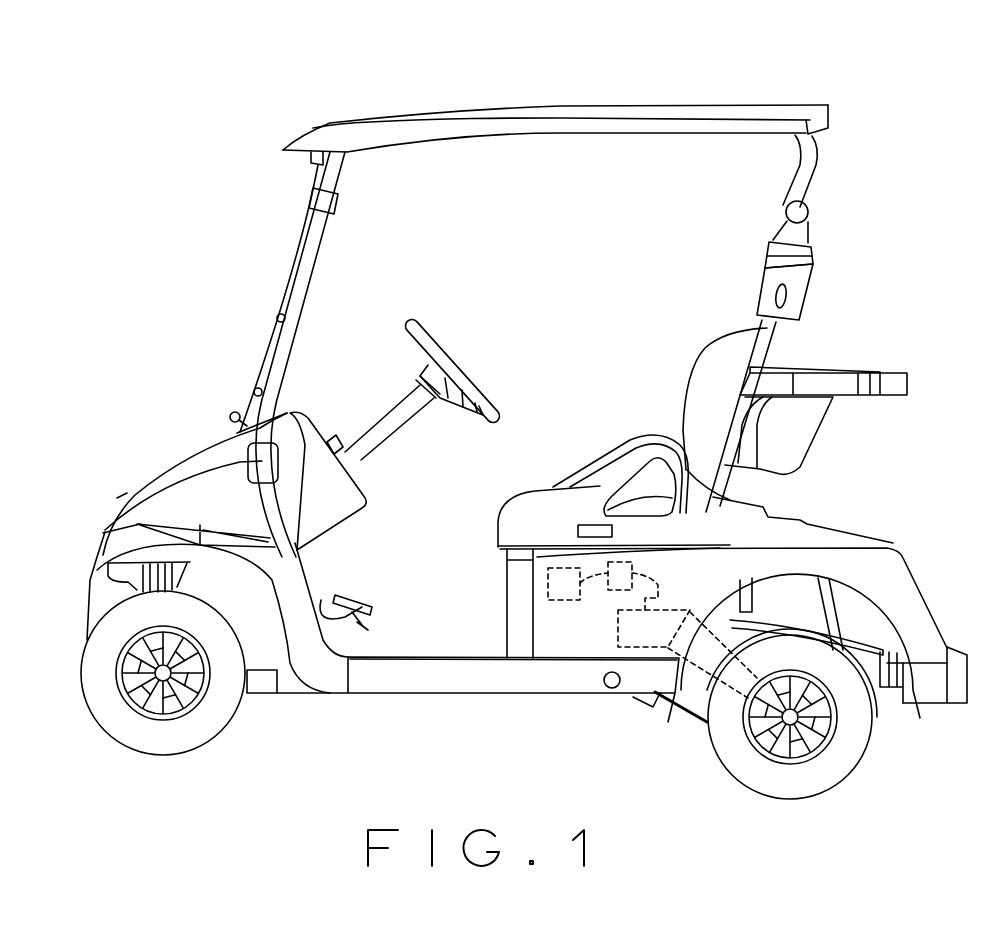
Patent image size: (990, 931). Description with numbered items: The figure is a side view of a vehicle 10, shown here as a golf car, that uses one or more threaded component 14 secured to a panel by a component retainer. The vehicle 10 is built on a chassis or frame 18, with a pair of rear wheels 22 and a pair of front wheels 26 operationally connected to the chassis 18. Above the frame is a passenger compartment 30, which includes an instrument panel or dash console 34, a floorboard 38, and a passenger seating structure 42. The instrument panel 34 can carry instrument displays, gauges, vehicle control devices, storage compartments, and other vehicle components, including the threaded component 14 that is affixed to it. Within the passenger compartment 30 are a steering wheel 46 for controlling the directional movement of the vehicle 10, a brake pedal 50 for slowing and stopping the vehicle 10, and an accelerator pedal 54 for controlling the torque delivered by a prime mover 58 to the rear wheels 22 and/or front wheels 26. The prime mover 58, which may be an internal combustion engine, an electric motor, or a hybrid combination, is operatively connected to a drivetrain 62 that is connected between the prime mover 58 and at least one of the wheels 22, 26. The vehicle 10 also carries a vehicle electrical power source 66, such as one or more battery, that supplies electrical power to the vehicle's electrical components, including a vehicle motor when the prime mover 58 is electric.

The vehicle 10 is at (262, 80).
The threaded component 14 is at (345, 435).
The chassis or frame 18 is at (262, 685).
The rear wheels 22 is at (803, 783).
The front wheels 26 is at (133, 733).
The passenger compartment 30 is at (615, 232).
The instrument panel or dash console 34 is at (290, 395).
The floorboard 38 is at (438, 657).
The passenger seating structure 42 is at (628, 350).
The steering wheel 46 is at (426, 331).
The brake pedal 50 is at (348, 593).
The accelerator pedal 54 is at (362, 636).
The prime mover 58 is at (633, 633).
The drivetrain 62 is at (712, 660).
The vehicle electrical power source 66 is at (565, 580).